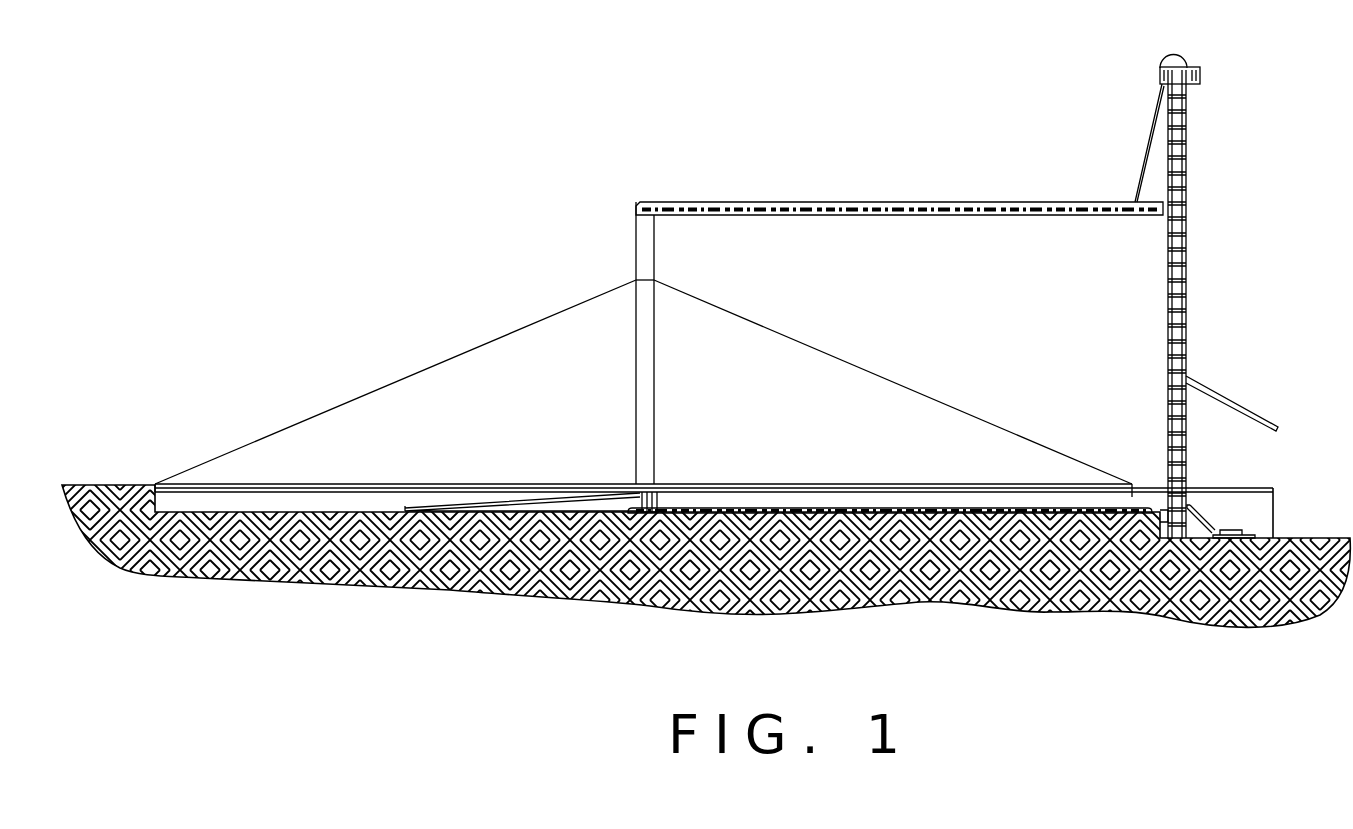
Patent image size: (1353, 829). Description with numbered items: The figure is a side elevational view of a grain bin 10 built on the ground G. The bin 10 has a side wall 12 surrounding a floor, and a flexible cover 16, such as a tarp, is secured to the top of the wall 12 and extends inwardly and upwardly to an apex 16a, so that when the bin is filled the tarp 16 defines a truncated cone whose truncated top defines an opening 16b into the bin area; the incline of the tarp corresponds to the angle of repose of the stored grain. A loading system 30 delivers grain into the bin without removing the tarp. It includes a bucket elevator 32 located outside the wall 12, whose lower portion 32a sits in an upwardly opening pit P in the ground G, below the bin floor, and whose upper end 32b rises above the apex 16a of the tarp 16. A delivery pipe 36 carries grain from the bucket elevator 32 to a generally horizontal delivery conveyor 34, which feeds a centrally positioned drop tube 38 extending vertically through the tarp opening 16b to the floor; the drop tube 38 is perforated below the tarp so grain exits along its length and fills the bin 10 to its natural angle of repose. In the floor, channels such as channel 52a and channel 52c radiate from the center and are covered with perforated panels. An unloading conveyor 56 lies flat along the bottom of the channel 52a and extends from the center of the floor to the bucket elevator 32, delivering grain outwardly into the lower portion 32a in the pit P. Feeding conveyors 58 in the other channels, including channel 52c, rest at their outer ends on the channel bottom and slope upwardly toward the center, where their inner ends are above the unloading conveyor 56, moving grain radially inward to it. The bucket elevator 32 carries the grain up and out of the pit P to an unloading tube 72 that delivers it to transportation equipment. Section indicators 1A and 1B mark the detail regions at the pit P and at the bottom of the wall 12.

The grain bin 10 is at (380, 365).
The side wall 12 is at (156, 484).
The cover 16 is at (822, 350).
The apex 16a is at (654, 280).
The opening 16b is at (636, 280).
The loading system 30 is at (1125, 148).
The bucket elevator 32 is at (1186, 292).
The lower portion of the bucket elevator 32a is at (1196, 500).
The upper end of the bucket elevator 32b is at (1190, 60).
The delivery conveyor 34 is at (772, 202).
The delivery pipe 36 is at (1153, 122).
The drop tube 38 is at (655, 415).
The channel 52a is at (875, 508).
The channel 52c is at (318, 490).
The unloading conveyor 56 is at (750, 494).
The feeding conveyor 58 is at (515, 500).
The unloading tube 72 is at (1205, 388).
The ground G is at (100, 485).
The pit P is at (1245, 510).
The section view 1A indicator 1A is at (1283, 380).
The section view 1B indicator 1B is at (190, 448).